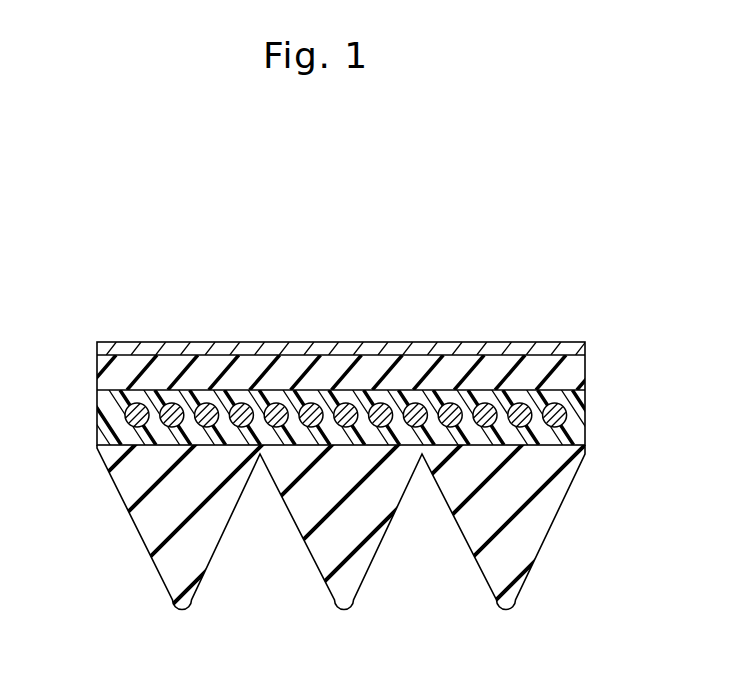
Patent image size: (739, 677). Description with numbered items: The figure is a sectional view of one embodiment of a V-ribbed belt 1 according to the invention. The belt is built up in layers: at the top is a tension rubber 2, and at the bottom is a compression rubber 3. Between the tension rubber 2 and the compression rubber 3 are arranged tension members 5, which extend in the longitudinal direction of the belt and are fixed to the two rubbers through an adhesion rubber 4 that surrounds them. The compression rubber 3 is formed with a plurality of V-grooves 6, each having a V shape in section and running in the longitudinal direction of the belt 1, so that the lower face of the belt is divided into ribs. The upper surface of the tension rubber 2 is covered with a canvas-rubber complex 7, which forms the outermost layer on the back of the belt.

The V-ribbed belt 1 is at (388, 318).
The tension rubber 2 is at (567, 375).
The compression rubber 3 is at (328, 532).
The adhesion rubber 4 is at (583, 432).
The tension members 5 is at (166, 430).
The V-grooves 6 is at (292, 520).
The canvas-rubber complex 7 is at (584, 345).